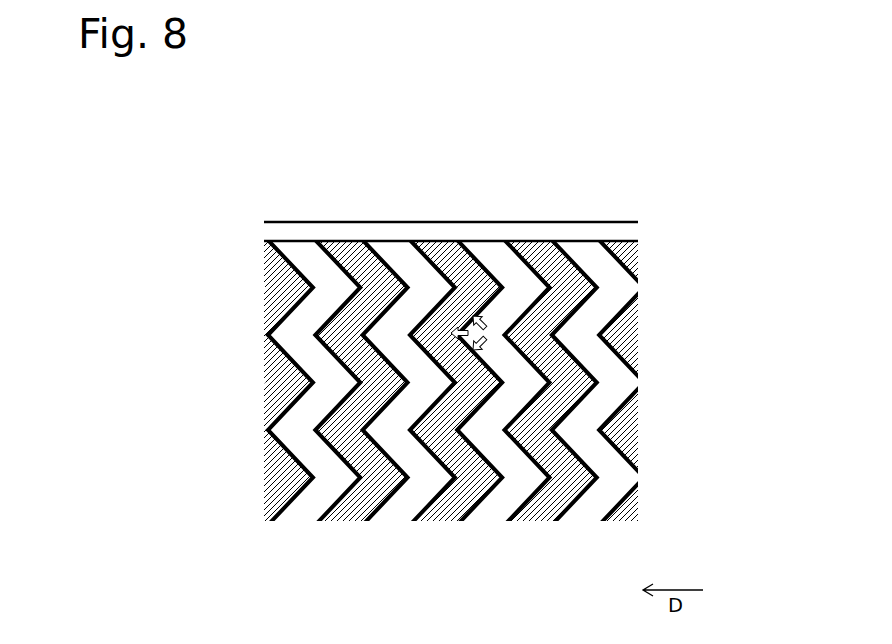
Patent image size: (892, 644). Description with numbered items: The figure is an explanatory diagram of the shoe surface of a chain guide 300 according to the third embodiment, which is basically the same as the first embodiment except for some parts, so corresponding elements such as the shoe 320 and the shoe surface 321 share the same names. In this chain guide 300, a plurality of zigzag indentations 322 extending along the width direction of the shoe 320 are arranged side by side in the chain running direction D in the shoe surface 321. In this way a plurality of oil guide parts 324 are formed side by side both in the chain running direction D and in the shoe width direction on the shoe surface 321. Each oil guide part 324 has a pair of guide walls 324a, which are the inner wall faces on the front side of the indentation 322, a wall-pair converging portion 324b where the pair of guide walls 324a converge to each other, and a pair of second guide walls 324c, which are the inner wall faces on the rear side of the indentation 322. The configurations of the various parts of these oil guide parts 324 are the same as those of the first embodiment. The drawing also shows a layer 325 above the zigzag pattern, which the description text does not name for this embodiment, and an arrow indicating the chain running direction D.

The chain guide 300 is at (437, 344).
The shoe 320 is at (420, 344).
The shoe surface 321 is at (492, 362).
The zigzag indentation 322 is at (582, 326).
The oil guide part 324 is at (456, 364).
The guide wall 324a is at (407, 272).
The wall-pair converging portion 324b is at (363, 333).
The second guide wall 324c is at (470, 268).
The flat plate 325 is at (317, 232).